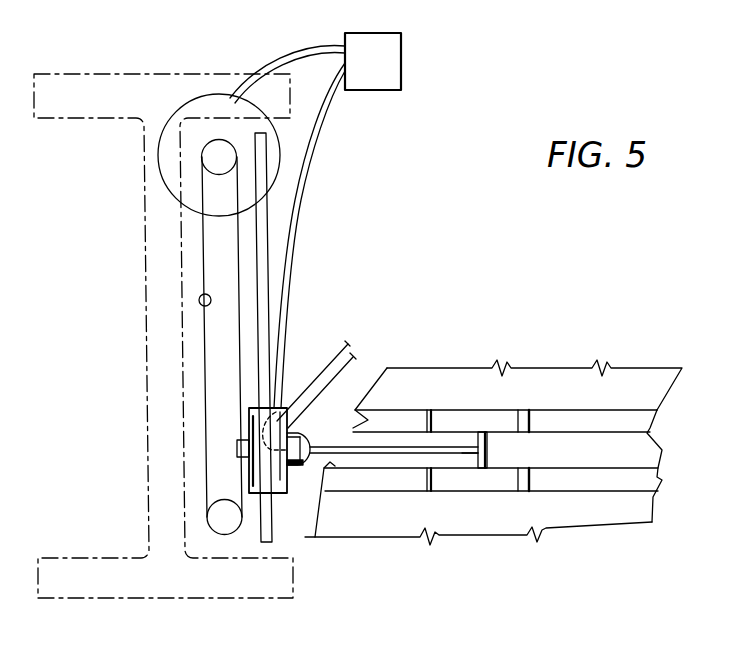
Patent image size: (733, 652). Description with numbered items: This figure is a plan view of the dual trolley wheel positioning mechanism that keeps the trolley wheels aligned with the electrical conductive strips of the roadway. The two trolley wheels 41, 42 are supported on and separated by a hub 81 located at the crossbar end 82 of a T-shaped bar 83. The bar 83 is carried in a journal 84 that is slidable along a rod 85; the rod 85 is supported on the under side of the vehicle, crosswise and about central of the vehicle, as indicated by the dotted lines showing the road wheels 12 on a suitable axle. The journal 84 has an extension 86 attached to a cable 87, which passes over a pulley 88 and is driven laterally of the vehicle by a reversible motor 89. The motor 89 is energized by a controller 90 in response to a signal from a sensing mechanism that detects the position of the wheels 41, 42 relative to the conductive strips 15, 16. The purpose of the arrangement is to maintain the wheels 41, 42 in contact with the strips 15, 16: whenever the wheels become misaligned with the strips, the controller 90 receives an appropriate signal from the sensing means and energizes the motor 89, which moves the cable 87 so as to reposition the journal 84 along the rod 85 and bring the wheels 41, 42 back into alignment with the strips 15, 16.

The wheels 12 is at (123, 122).
The conductive strip 15 is at (640, 417).
The conductive strip 16 is at (585, 475).
The wheel 41 is at (512, 418).
The wheel 42 is at (472, 497).
The hub 81 is at (486, 447).
The crossbar end 82 is at (467, 460).
The T-shaped bar 83 is at (318, 453).
The journal 84 is at (284, 432).
The rod 85 is at (263, 273).
The extension 86 is at (237, 449).
The cable 87 is at (236, 320).
The pulley 88 is at (227, 527).
The reversible motor 89 is at (188, 98).
The controller 90 is at (402, 57).